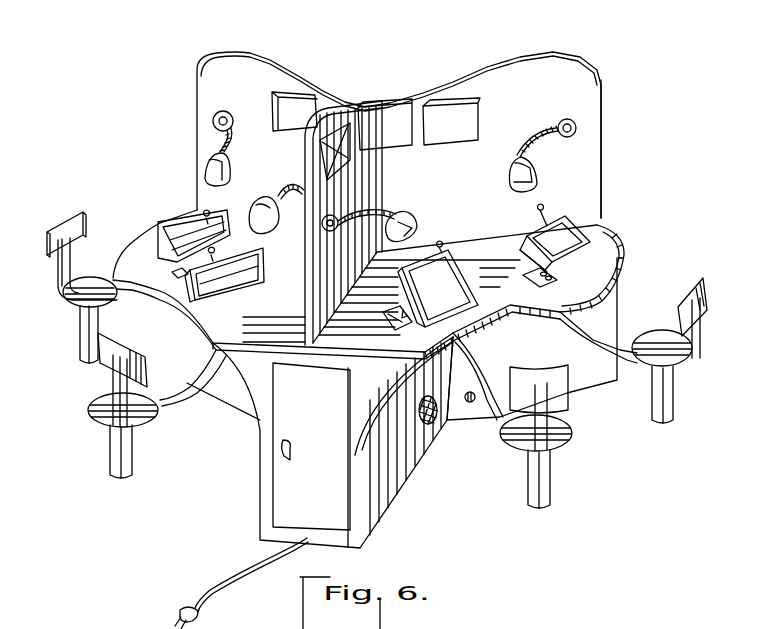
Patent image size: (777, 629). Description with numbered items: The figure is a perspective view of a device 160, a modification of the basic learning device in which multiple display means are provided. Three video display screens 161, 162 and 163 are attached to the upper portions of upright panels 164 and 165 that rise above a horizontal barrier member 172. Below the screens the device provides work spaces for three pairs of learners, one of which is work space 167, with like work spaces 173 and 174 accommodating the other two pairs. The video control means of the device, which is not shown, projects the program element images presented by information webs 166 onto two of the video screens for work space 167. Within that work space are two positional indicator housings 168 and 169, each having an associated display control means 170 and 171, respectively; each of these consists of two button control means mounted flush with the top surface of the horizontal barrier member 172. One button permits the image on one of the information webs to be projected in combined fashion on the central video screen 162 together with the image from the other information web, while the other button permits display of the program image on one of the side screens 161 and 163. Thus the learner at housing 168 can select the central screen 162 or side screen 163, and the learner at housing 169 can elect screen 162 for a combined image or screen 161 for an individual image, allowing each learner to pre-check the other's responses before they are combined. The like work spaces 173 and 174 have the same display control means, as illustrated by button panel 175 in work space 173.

The device 160 is at (625, 101).
The video display screen 161 is at (330, 133).
The central video screen 162 is at (397, 113).
The video display screen 163 is at (453, 113).
The upright panel 164 is at (320, 284).
The upright panel 165 is at (495, 200).
The information web 166 is at (563, 240).
The work space 167 is at (588, 147).
The positional indicator housing 168 is at (490, 262).
The positional indicator housing 169 is at (555, 210).
The display control means 170 is at (383, 318).
The display control means 171 is at (545, 284).
The horizontal barrier member 172 is at (253, 327).
The work space 173 is at (258, 115).
The work space 174 is at (524, 51).
The button panel 175 is at (158, 278).